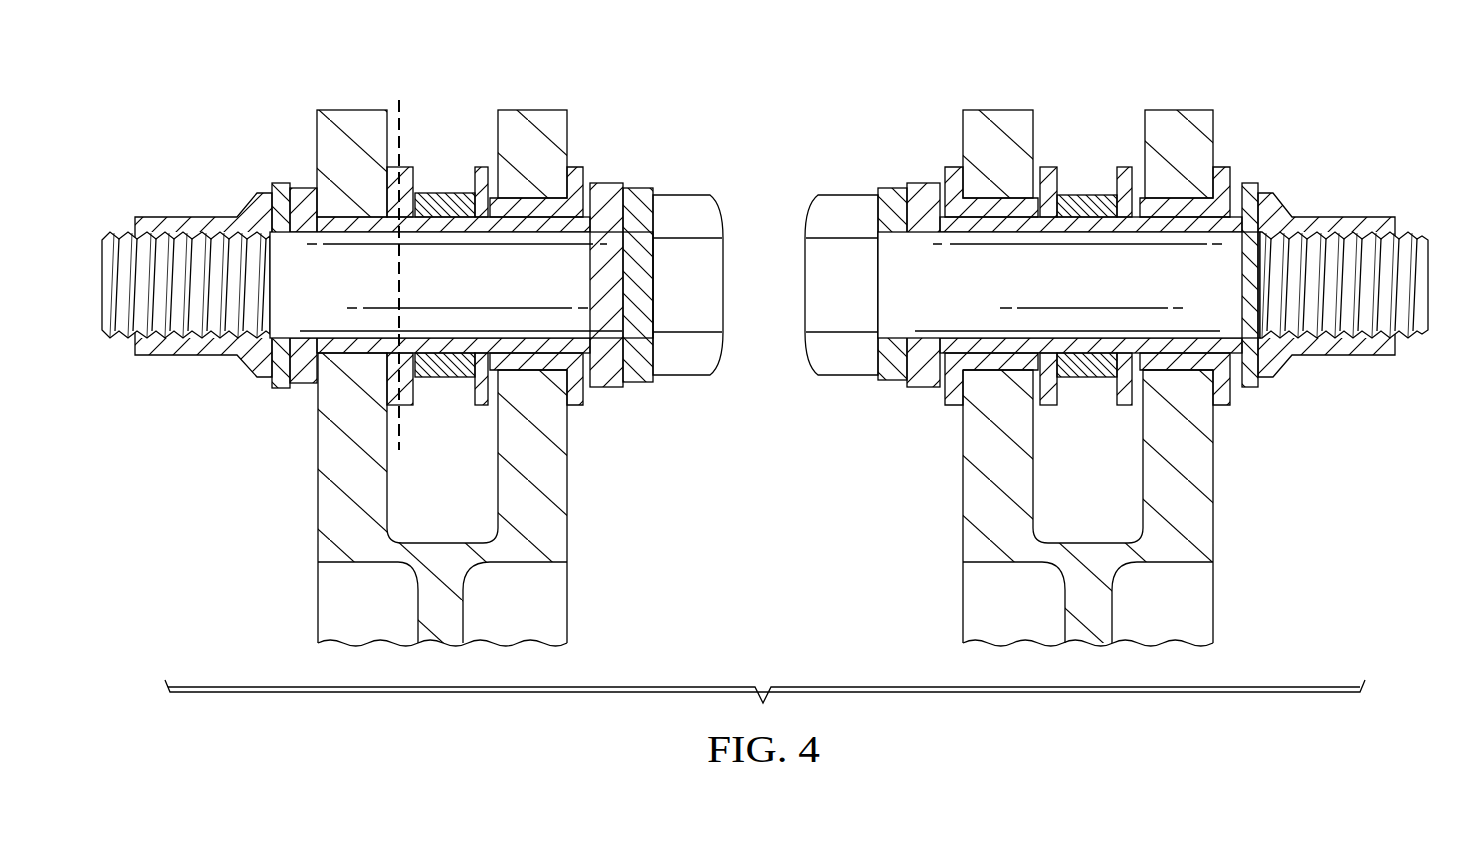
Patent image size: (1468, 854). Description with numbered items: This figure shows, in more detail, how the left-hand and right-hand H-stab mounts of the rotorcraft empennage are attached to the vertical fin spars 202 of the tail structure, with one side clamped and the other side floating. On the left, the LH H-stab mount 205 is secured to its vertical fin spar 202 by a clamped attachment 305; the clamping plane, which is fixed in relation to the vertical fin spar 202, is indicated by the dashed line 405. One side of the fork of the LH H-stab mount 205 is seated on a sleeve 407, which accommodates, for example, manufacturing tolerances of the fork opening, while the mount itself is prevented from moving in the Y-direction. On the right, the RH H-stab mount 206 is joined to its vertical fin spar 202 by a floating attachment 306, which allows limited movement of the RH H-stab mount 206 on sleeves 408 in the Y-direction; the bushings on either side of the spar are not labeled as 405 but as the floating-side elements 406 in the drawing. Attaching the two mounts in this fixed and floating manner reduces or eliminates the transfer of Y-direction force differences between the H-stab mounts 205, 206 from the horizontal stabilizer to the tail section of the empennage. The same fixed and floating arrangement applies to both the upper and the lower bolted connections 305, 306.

The vertical fin spar 202 is at (433, 193).
The LH H-stab mount 205 is at (568, 474).
The RH H-stab mount 206 is at (1213, 462).
The clamped attachment 305 is at (270, 426).
The floating attachment 306 is at (902, 426).
The fixed clamping plane 405 is at (401, 122).
The bushings 406 is at (935, 156).
The sleeve 407 is at (535, 222).
The sleeves 408 is at (1177, 222).